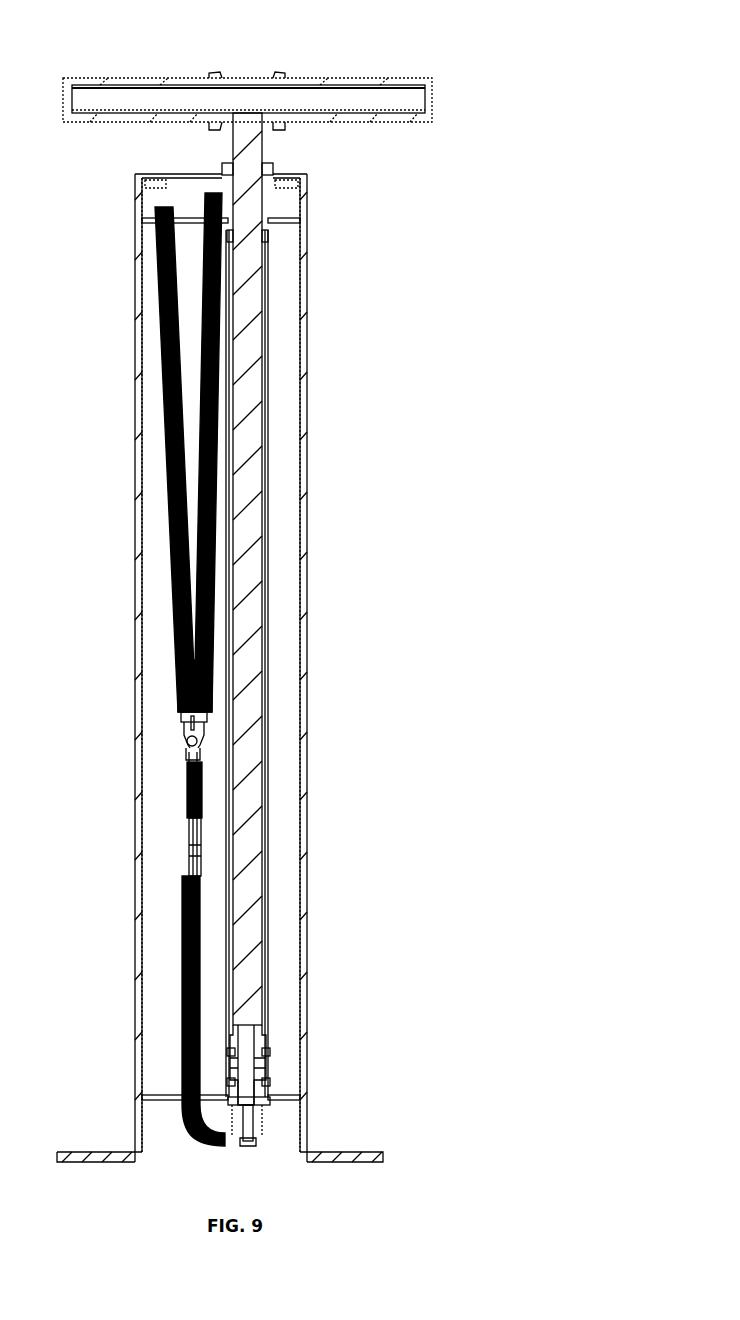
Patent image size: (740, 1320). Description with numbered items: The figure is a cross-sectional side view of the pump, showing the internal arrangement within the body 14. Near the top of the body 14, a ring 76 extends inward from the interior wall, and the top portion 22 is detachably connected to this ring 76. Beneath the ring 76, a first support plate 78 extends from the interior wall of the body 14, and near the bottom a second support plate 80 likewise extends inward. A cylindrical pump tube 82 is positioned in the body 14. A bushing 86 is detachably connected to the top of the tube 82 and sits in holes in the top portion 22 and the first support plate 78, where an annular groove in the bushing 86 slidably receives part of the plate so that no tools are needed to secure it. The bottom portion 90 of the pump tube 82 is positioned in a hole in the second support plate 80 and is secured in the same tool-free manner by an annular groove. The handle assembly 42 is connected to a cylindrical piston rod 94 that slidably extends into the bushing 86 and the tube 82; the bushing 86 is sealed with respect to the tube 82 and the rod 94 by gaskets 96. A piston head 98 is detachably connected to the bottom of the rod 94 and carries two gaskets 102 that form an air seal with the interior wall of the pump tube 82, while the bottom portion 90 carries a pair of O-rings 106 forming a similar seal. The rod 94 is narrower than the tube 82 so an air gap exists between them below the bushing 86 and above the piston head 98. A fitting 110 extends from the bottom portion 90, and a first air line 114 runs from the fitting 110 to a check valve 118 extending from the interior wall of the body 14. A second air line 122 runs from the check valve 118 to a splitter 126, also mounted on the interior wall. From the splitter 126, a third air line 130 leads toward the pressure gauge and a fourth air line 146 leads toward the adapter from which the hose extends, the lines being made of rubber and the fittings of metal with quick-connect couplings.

The handle assembly 42 is at (252, 77).
The top portion 22 is at (227, 646).
The gaskets/O-rings 96 is at (274, 172).
The ring 76 is at (276, 190).
The first support plate 78 is at (185, 228).
The bushing 86 is at (262, 265).
The piston rod 94 is at (252, 330).
The body 14 is at (306, 420).
The fourth air line 146 is at (207, 494).
The third air line 130 is at (190, 652).
The splitter 126 is at (197, 740).
The pump tube 82 is at (270, 770).
The second air line 122 is at (188, 788).
The check valve 118 is at (190, 846).
The first air line 114 is at (184, 944).
The gaskets 102 is at (230, 1050).
The piston head 98 is at (268, 1042).
The O-rings 106 is at (268, 1078).
The bottom portion 90 is at (268, 1100).
The second support plate 80 is at (154, 1096).
The fitting 110 is at (248, 1142).